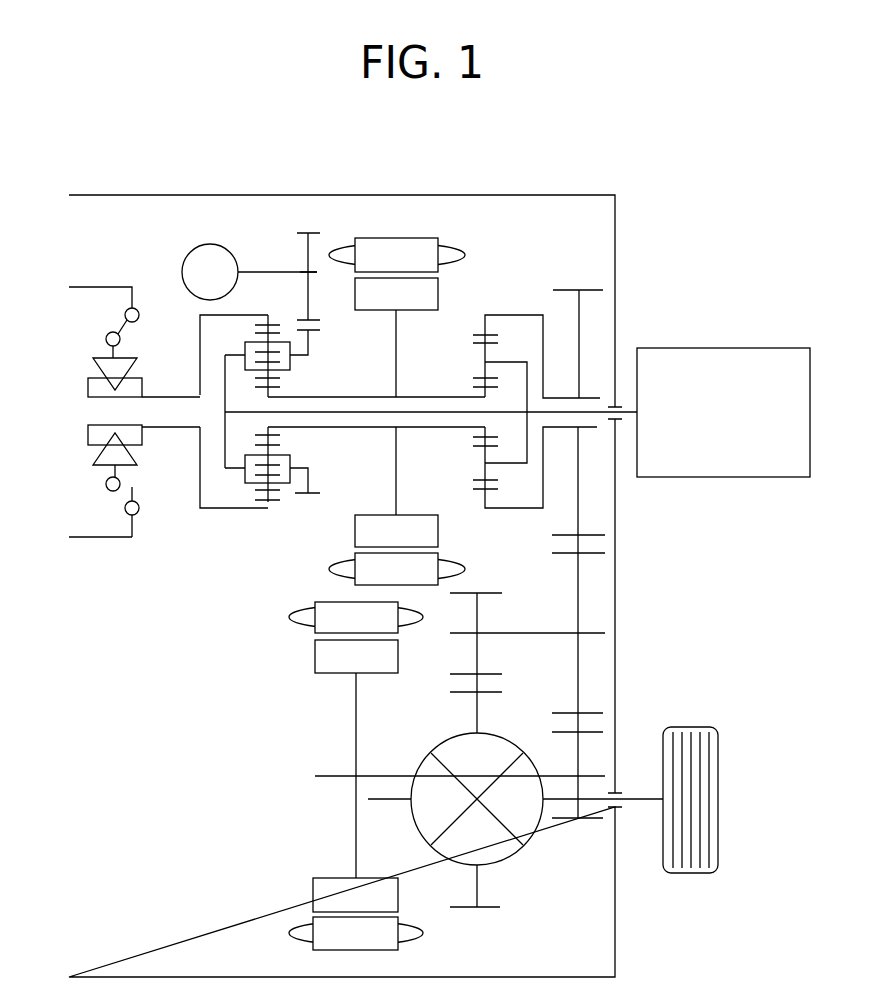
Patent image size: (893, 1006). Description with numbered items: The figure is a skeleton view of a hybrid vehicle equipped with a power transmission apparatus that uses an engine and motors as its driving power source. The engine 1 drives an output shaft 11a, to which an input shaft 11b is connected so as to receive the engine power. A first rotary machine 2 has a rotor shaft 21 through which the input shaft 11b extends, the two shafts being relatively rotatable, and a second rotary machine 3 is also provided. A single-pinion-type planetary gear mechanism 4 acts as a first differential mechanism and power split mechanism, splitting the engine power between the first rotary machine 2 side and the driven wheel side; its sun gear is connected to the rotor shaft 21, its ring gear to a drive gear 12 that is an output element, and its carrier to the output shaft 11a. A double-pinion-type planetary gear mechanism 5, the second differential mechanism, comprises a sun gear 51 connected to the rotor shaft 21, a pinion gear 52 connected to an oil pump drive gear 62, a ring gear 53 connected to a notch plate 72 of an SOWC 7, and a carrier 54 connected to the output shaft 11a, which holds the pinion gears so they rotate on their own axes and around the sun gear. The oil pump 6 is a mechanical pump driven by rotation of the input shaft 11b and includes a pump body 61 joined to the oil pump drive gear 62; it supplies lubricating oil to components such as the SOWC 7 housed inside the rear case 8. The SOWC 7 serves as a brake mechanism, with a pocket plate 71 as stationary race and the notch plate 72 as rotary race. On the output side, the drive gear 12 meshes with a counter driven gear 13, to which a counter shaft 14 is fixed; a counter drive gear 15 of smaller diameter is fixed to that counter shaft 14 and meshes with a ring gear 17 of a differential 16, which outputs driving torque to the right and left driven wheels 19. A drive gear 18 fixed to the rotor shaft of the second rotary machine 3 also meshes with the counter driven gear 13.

The engine 1 is at (782, 348).
The first rotary machine 2 is at (452, 226).
The second rotary machine 3 is at (277, 925).
The single-pinion-type planetary gear mechanism 4 is at (508, 303).
The double-pinion-type planetary gear mechanism 5 is at (245, 456).
The oil pump 6 is at (243, 281).
The SOWC 7 is at (134, 462).
The rear case 8 is at (68, 603).
The output shaft 11a is at (630, 410).
The input shaft 11b is at (346, 416).
The drive gear 12 is at (595, 290).
The counter driven gear 13 is at (600, 553).
The counter shaft 14 is at (598, 633).
The counter drive gear 15 is at (488, 593).
The differential 16 is at (535, 840).
The ring gear 17 is at (490, 907).
The drive gear 18 is at (590, 818).
The driven wheels 19 is at (705, 727).
The rotor shaft 21 is at (356, 397).
The sun gear 51 is at (275, 393).
The pinion gear 52 is at (283, 490).
The ring gear 53 is at (277, 502).
The carrier 54 is at (223, 373).
The pump body 61 is at (230, 252).
The oil pump drive gear 62 is at (318, 330).
The pocket plate 71 is at (135, 530).
The notch plate 72 is at (143, 435).